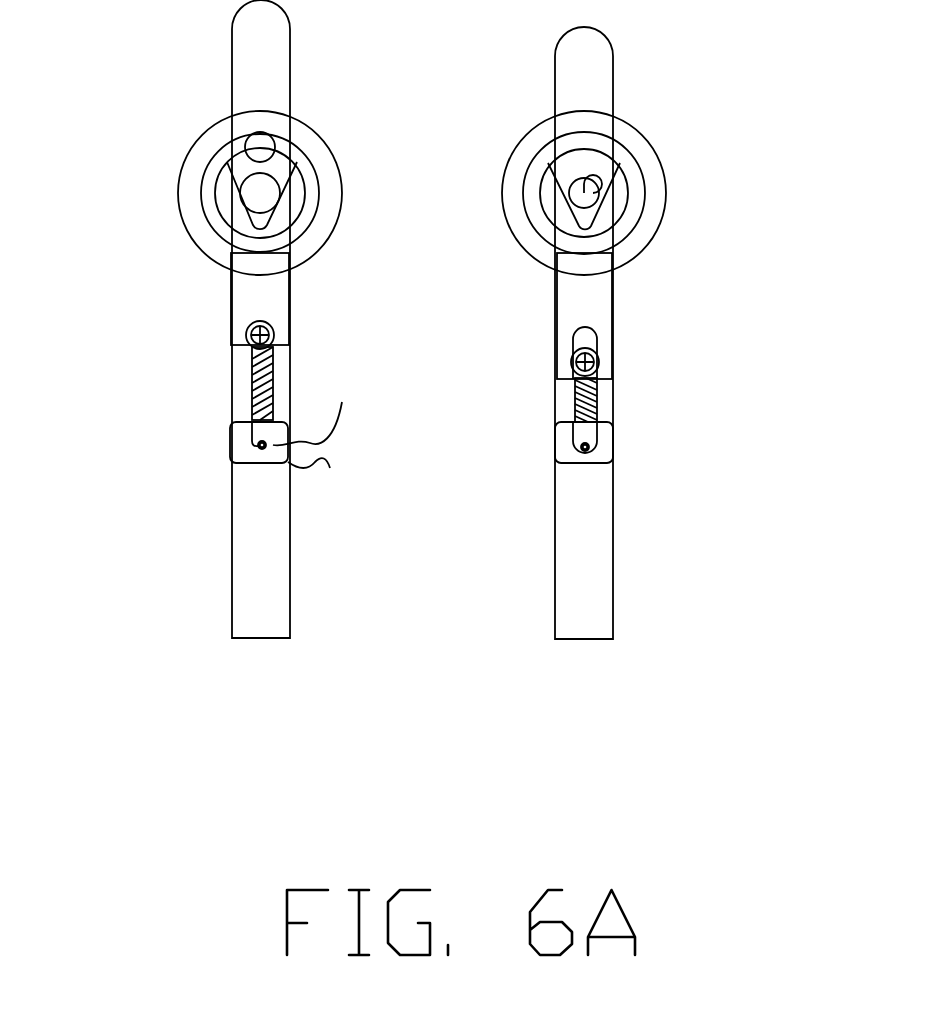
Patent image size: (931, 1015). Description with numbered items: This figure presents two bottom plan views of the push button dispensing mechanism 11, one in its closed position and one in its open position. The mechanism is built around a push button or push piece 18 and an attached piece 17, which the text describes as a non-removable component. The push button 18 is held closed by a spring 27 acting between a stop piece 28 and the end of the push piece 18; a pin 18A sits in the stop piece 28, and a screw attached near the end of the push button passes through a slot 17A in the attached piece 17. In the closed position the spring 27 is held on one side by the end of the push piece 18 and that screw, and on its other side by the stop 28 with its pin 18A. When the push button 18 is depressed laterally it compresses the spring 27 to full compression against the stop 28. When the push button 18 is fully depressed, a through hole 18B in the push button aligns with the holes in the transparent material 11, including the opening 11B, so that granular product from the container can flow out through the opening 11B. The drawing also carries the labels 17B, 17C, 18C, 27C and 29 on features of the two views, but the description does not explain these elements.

The push button dispensing mechanism 11 is at (745, 108).
The hole in transparent material 11B is at (253, 198).
The attached piece 17 is at (245, 570).
The slot 17A is at (250, 414).
The lower mounting block 17B is at (587, 447).
The slot 17C is at (590, 327).
The push button 18 is at (246, 50).
The pin 18A is at (250, 342).
The through hole 18B is at (260, 143).
The screw 18C is at (273, 335).
The spring 27 is at (258, 385).
The threaded shaft 27C is at (595, 400).
The stop piece 28 is at (249, 448).
The pivot pin 29 is at (588, 207).